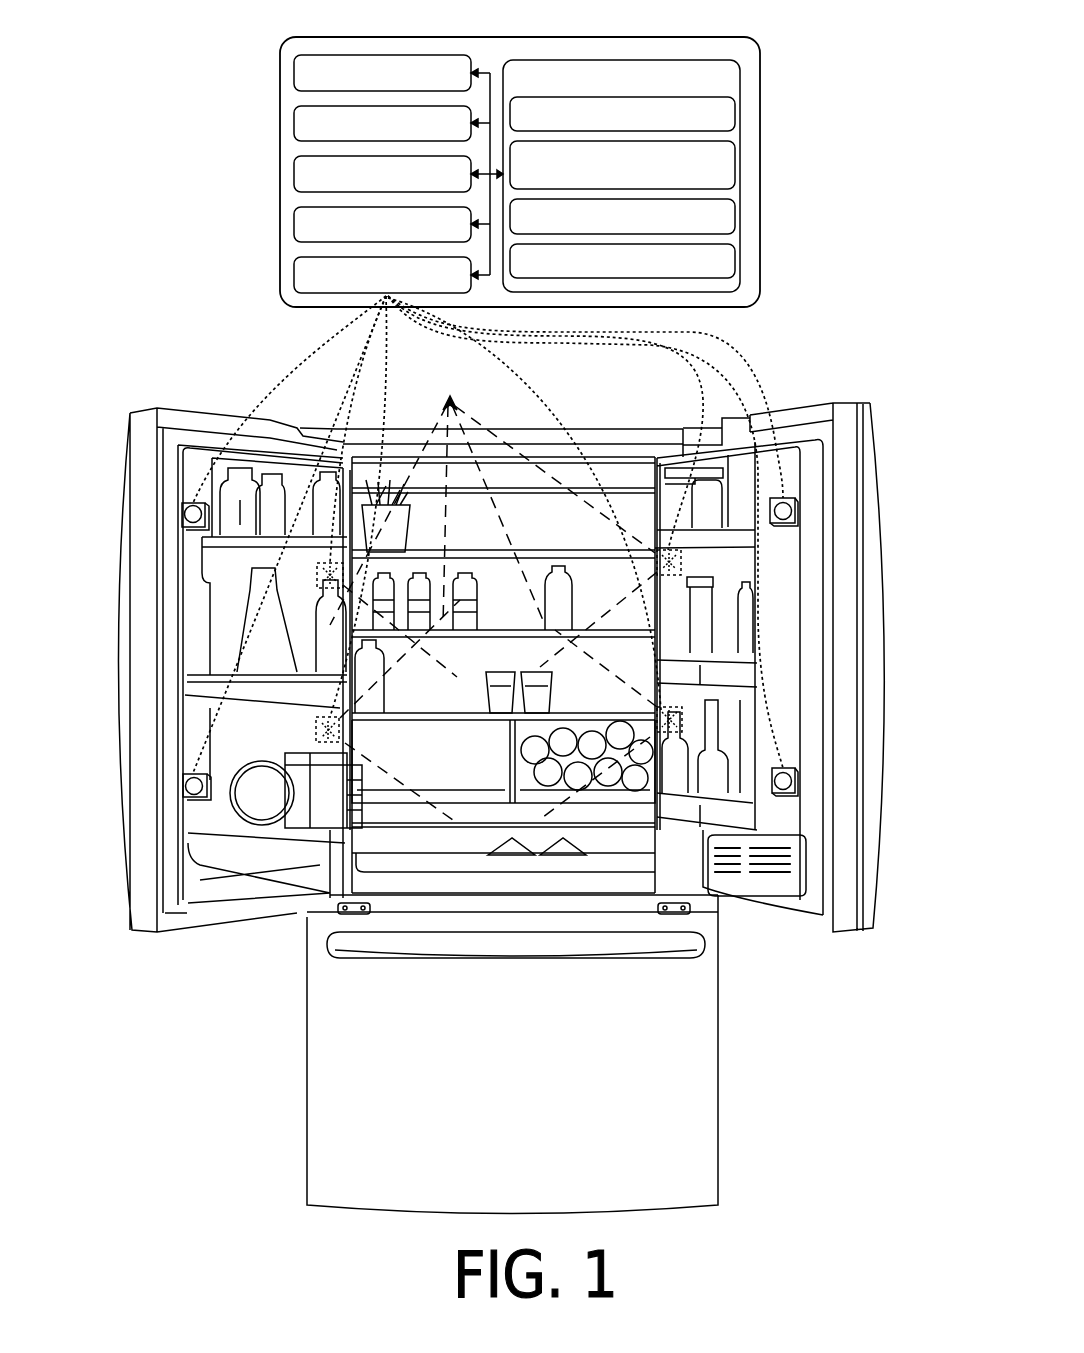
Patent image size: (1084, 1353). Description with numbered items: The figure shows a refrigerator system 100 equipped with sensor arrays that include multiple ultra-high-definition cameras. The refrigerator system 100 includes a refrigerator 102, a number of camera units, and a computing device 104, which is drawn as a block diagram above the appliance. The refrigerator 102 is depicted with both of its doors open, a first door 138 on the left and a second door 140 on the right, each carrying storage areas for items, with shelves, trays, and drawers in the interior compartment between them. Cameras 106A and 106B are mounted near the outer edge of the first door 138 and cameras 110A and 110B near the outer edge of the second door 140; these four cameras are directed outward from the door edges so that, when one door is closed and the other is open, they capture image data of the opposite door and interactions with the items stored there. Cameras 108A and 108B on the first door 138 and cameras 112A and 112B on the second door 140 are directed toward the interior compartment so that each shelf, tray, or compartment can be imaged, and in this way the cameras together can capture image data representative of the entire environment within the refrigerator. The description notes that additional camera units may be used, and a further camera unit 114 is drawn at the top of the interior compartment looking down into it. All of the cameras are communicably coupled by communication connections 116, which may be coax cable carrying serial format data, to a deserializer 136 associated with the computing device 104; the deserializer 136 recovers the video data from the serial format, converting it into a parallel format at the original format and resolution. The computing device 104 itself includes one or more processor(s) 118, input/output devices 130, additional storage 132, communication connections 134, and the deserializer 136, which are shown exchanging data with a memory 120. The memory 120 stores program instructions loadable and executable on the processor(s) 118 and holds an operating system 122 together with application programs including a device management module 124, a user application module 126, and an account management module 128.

The refrigerator system 100 is at (134, 200).
The refrigerator 102 is at (307, 1062).
The computing device 104 is at (281, 50).
The camera 106A is at (182, 512).
The camera 106B is at (183, 786).
The camera 108A is at (317, 575).
The camera 108B is at (317, 730).
The camera 110A is at (796, 511).
The camera 110B is at (796, 782).
The camera 112A is at (681, 560).
The camera 112B is at (683, 718).
The interior camera 114 is at (450, 398).
The communication connections 116 is at (333, 345).
The processor(s) 118 is at (382, 73).
The memory 120 is at (621, 176).
The operating system 122 is at (622, 114).
The device management module 124 is at (622, 165).
The user application module 126 is at (622, 216).
The account management module 128 is at (622, 261).
The input/output devices 130 is at (382, 123).
The additional storage 132 is at (382, 174).
The communication connections 134 is at (382, 224).
The deserializer 136 is at (382, 275).
The first door 138 is at (157, 407).
The second door 140 is at (851, 401).